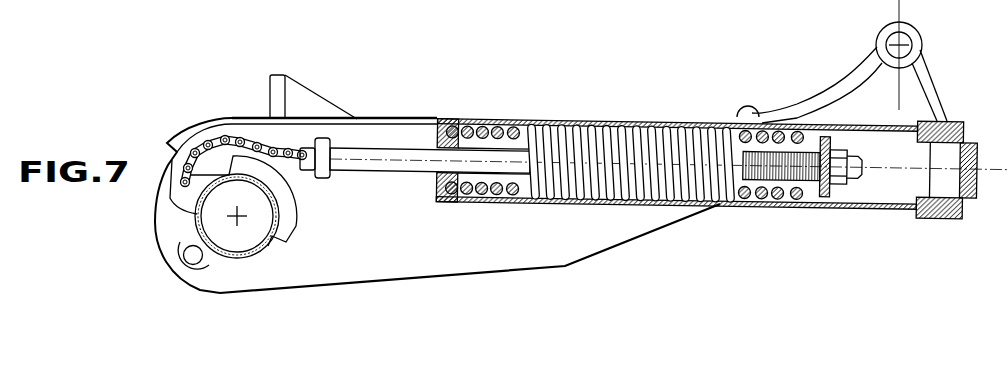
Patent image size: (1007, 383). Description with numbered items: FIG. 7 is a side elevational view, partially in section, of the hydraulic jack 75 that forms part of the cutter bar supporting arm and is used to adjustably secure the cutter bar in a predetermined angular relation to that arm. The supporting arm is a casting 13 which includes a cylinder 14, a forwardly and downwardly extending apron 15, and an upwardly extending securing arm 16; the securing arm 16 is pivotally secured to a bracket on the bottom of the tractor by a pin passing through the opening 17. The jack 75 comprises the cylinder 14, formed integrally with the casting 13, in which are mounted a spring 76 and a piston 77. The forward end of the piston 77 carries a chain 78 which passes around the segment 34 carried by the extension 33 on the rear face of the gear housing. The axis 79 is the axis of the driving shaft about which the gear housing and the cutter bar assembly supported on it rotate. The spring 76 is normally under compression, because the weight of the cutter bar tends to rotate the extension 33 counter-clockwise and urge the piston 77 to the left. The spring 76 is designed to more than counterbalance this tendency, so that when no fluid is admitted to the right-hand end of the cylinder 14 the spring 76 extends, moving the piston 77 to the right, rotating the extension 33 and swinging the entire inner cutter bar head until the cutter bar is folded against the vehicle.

The casting 13 is at (420, 130).
The cylinder 14 is at (573, 200).
The apron 15 is at (438, 258).
The securing arm 16 is at (920, 90).
The opening 17 is at (910, 37).
The extension 33 is at (260, 242).
The segment 34 is at (253, 165).
The jack 75 is at (612, 110).
The spring 76 is at (490, 193).
The piston 77 is at (407, 163).
The chain 78 is at (257, 147).
The axis of the shaft 79 is at (237, 216).